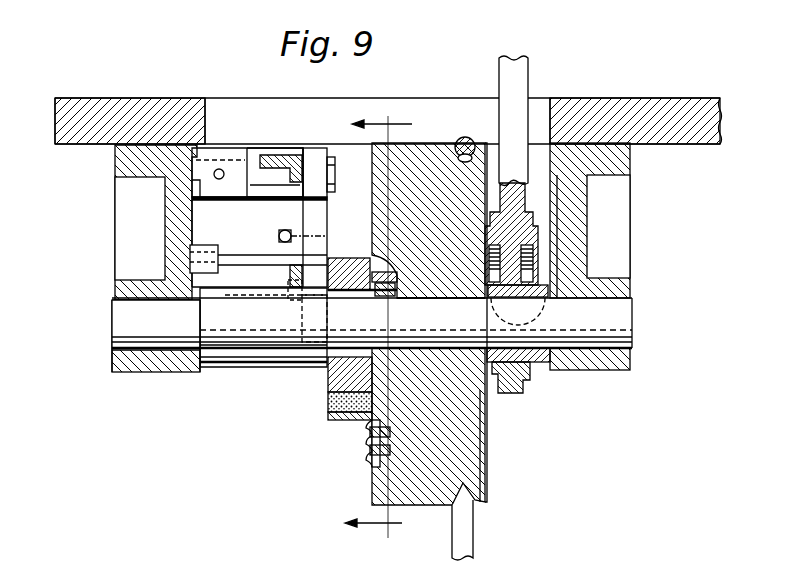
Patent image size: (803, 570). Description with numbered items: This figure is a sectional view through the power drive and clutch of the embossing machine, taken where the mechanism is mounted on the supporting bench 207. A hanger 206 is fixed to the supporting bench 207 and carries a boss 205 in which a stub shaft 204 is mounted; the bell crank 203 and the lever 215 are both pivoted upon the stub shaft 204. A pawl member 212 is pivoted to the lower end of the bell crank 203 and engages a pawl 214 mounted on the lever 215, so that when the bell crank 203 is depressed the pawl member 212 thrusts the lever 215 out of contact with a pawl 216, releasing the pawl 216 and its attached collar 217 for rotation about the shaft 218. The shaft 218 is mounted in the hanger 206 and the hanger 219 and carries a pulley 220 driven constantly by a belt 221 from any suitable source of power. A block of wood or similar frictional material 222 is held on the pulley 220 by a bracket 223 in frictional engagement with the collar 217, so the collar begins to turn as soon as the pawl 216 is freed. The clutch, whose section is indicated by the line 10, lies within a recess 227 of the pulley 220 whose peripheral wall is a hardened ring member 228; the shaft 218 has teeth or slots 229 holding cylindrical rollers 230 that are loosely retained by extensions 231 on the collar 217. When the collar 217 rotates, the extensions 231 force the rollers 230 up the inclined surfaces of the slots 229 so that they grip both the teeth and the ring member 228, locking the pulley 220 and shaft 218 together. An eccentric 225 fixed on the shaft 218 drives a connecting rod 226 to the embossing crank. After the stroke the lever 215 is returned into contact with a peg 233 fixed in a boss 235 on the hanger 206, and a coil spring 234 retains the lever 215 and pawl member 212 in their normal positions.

The clutch mechanism section line 10 is at (370, 327).
The bell crank 203 is at (280, 153).
The stub shaft 204 is at (253, 170).
The boss 205 is at (211, 170).
The hanger 206 is at (115, 162).
The supporting bench 207 is at (104, 106).
The pawl member 212 is at (290, 275).
The pawl 214 is at (288, 297).
The lever 215 is at (318, 214).
The pawl 216 is at (304, 331).
The collar 217 is at (331, 391).
The shaft 218 is at (259, 353).
The hanger 219 is at (620, 166).
The pulley 220 is at (427, 503).
The belt 221 is at (468, 543).
The frictional material block 222 is at (331, 409).
The bracket 223 is at (362, 440).
The eccentric 225 is at (541, 365).
The connecting rod 226 is at (524, 84).
The recess 227 is at (392, 262).
The ring member 228 is at (336, 383).
The teeth or slots 229 is at (373, 341).
The cylindrical rollers 230 is at (374, 295).
The extensions 231 is at (390, 363).
The peg 233 is at (241, 256).
The coil spring 234 is at (284, 231).
The boss 235 is at (203, 245).